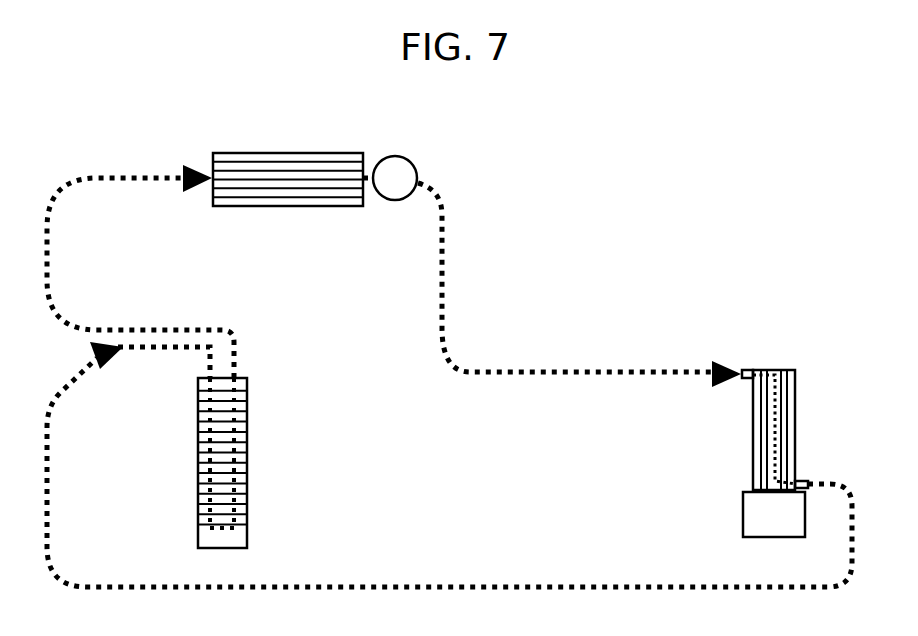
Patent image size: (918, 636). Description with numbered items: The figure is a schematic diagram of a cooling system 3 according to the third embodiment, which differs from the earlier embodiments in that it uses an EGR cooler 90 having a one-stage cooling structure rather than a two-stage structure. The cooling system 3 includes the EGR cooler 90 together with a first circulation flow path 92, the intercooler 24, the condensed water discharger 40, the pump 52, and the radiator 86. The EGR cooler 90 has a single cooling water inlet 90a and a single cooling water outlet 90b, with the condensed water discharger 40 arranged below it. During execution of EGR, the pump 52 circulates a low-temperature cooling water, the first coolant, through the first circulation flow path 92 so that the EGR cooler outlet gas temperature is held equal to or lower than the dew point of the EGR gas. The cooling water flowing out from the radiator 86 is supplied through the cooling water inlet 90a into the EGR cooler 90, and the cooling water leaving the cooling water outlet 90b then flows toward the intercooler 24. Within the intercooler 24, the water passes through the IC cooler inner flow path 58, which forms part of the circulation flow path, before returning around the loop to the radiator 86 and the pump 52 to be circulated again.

The cooling system 3 is at (727, 141).
The intercooler 24 is at (242, 377).
The IC cooler inner flow path 58 is at (198, 418).
The radiator 86 is at (262, 153).
The pump 52 is at (400, 157).
The first circulation flow path 92 is at (536, 371).
The EGR cooler 90 is at (804, 371).
The cooling water inlet 90a is at (750, 369).
The cooling water outlet 90b is at (808, 481).
The condensed water discharger 40 is at (743, 512).